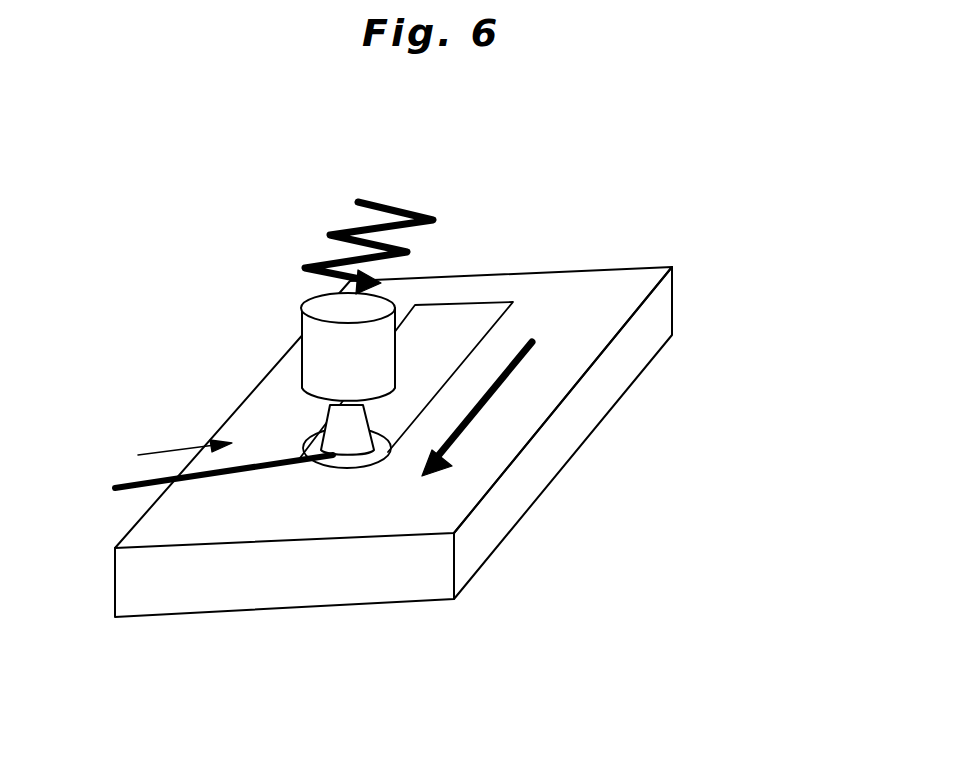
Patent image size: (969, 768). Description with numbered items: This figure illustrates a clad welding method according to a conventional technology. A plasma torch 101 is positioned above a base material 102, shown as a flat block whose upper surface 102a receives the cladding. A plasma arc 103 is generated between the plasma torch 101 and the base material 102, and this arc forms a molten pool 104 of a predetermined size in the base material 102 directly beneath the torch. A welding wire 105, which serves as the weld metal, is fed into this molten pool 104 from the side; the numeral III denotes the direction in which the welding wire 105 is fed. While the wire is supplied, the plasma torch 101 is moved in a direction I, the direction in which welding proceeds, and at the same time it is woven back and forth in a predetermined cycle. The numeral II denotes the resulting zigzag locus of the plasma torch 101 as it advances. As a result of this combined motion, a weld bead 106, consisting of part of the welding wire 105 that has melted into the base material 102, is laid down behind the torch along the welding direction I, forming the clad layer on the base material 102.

The plasma torch 101 is at (308, 328).
The base material 102 is at (692, 300).
The surface of workpiece 102a is at (573, 357).
The plasma arc 103 is at (333, 421).
The molten pool 104 is at (368, 458).
The welding wire 105 is at (123, 493).
The weld bead 106 is at (488, 308).
The direction in which welding proceeds I is at (483, 408).
The locus of the plasma torch II is at (409, 204).
The direction in which the welding wire is fed III is at (178, 450).